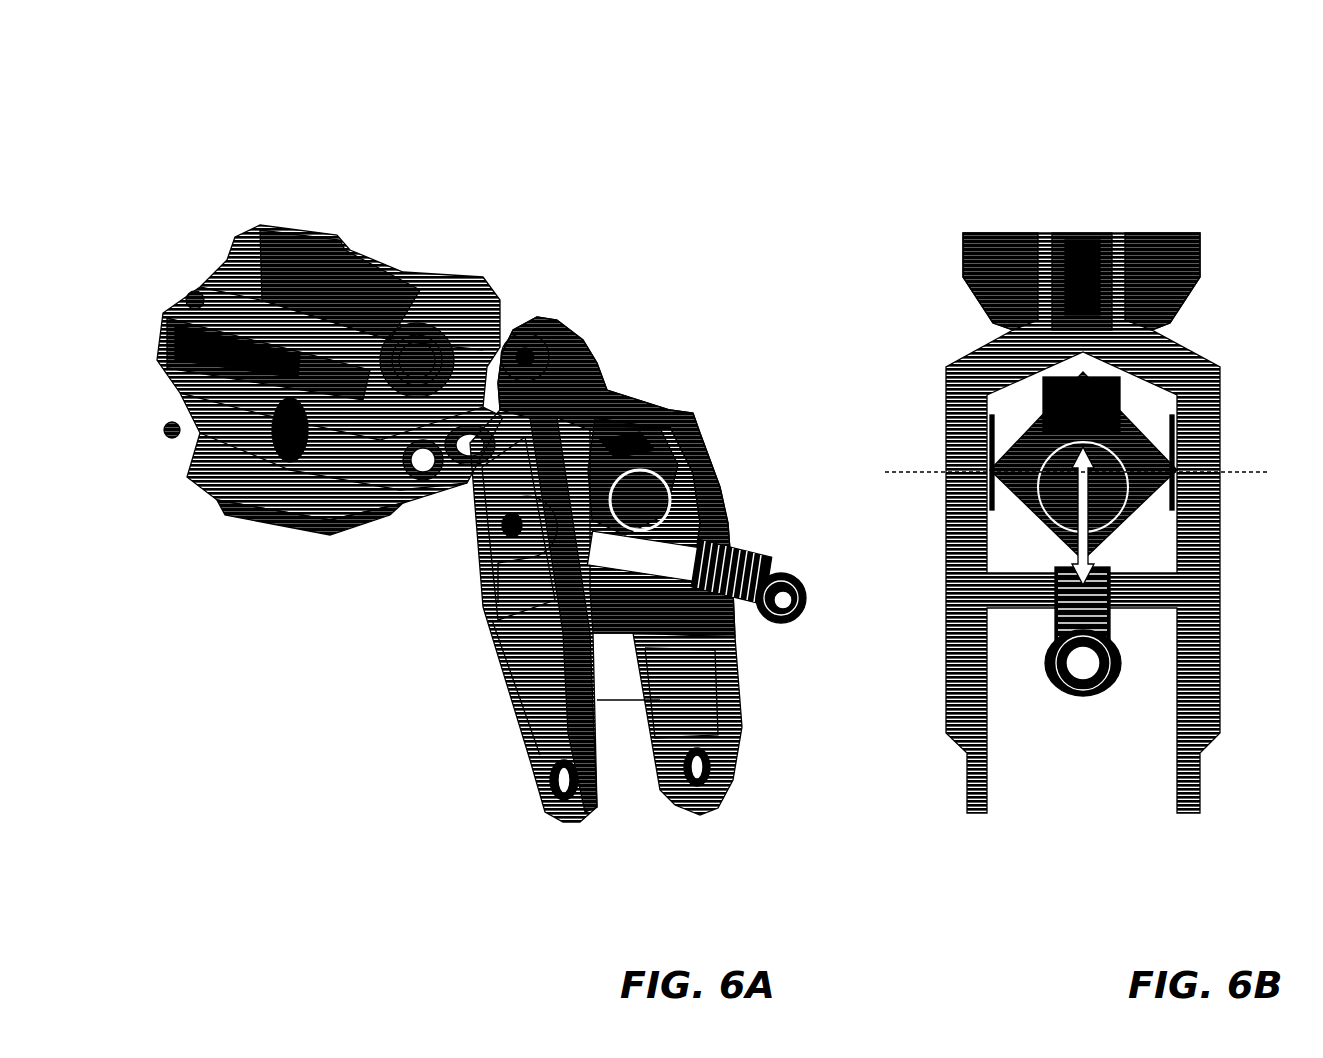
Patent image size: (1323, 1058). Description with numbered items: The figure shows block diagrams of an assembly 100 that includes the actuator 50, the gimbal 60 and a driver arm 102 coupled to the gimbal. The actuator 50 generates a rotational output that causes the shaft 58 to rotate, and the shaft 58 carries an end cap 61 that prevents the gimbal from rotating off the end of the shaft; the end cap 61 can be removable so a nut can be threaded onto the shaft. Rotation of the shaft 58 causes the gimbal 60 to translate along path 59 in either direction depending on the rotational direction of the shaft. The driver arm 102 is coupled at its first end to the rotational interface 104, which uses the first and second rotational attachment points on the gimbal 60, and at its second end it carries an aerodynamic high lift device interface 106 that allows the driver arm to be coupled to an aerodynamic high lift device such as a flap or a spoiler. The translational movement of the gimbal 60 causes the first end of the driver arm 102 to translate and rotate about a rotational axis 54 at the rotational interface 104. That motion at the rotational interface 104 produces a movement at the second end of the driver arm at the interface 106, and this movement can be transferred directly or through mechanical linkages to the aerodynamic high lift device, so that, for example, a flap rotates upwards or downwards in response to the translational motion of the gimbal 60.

In FIG. 6A, the assembly 100 is at (208, 150).
In FIG. 6B, the assembly 100 is at (924, 153).
In FIG. 6A, the actuator 50 is at (360, 300).
In FIG. 6A, the gimbal 60 is at (626, 463).
In FIG. 6A, the shaft 58 is at (720, 510).
In FIG. 6A, the rotational interface 104 is at (512, 527).
In FIG. 6A, the driver arm 102 is at (505, 621).
In FIG. 6B, the driver arm 102 is at (985, 592).
In FIG. 6A, the aerodynamic high lift device interface 106 is at (630, 837).
In FIG. 6B, the path 59 is at (1083, 513).
In FIG. 6B, the rotational axis 54 is at (903, 473).
In FIG. 6B, the end cap 61 is at (1083, 675).